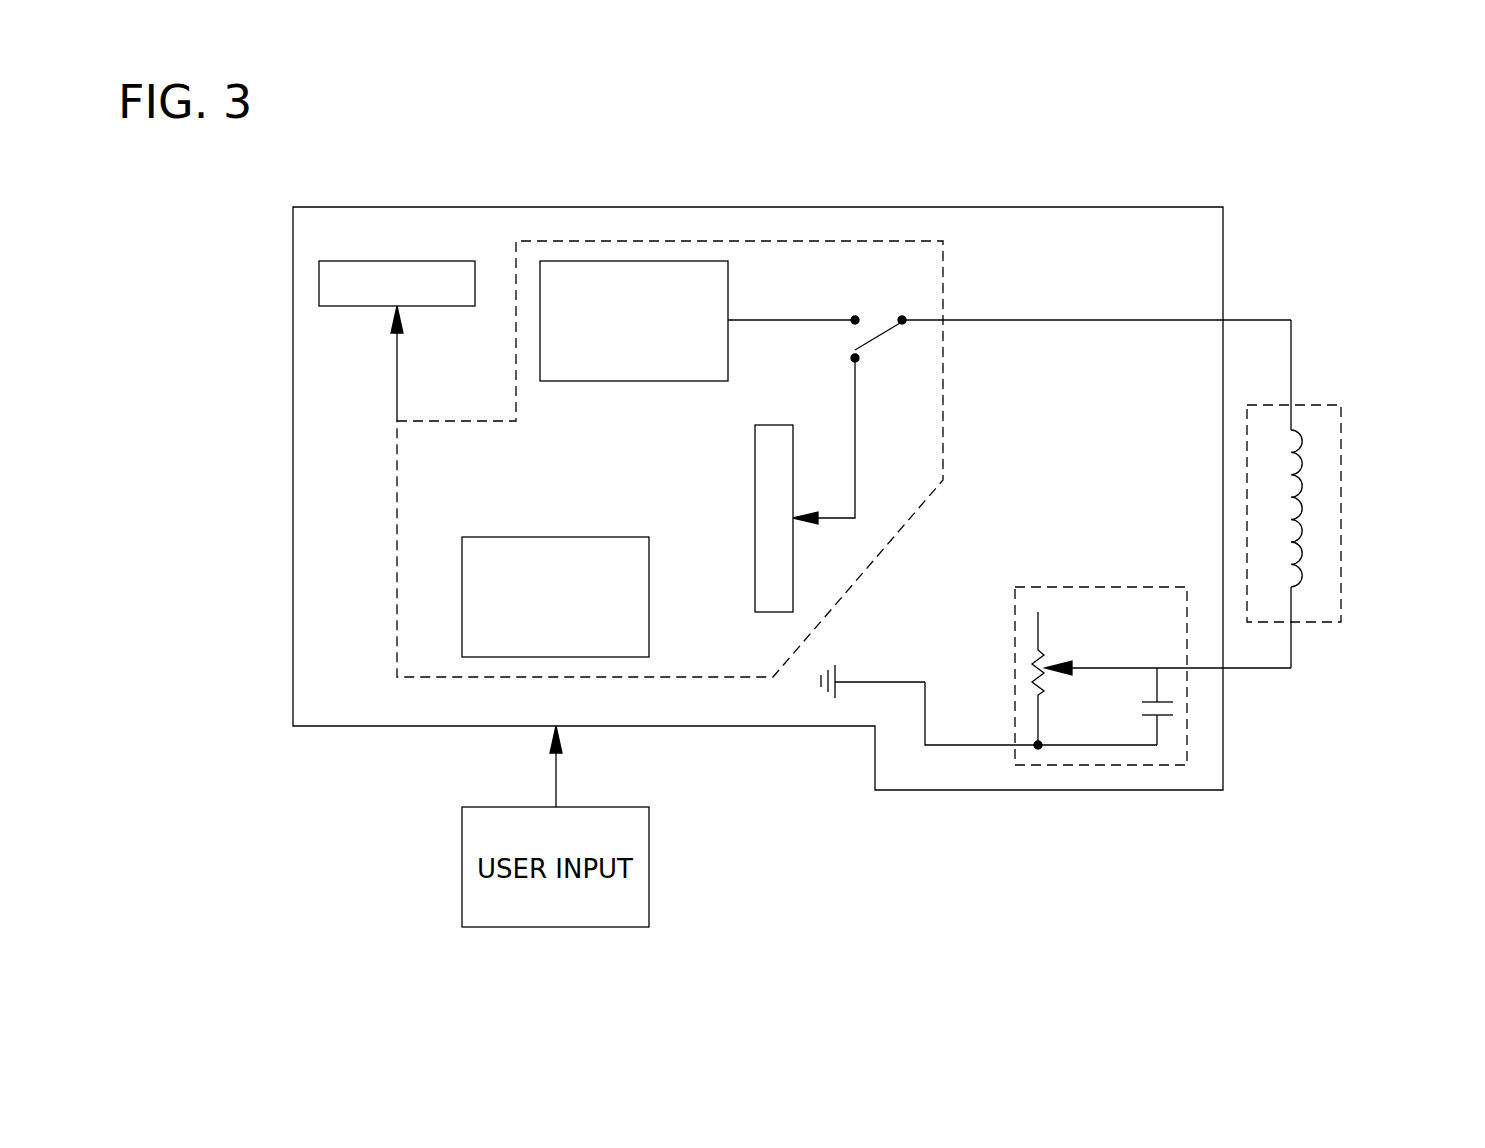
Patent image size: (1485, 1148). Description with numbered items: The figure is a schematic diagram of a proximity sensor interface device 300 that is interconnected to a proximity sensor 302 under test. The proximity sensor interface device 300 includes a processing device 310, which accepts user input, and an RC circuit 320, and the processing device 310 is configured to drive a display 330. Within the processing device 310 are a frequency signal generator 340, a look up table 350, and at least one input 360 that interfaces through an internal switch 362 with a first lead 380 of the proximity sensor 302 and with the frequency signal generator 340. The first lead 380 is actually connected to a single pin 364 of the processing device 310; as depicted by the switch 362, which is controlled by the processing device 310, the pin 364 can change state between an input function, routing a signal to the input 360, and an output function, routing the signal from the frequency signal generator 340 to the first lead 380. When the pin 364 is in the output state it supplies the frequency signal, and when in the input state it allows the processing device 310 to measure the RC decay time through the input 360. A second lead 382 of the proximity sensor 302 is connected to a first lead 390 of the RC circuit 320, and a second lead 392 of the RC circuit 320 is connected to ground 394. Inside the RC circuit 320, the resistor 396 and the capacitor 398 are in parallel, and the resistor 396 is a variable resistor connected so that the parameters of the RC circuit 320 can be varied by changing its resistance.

The proximity sensor interface device 300 is at (684, 498).
The proximity sensor 302 is at (1341, 442).
The processing device 310 is at (397, 652).
The RC circuit 320 is at (1187, 727).
The display 330 is at (319, 275).
The frequency signal generator 340 is at (633, 382).
The look up table 350 is at (508, 537).
The input 360 is at (755, 445).
The switch 362 is at (880, 302).
The pin 364 is at (982, 321).
The first lead 380 is at (1291, 333).
The second lead 382 is at (1291, 648).
The first lead 390 is at (1207, 667).
The second lead 392 is at (913, 745).
The ground 394 is at (863, 682).
The resistor 396 is at (1033, 668).
The capacitor 398 is at (1140, 705).